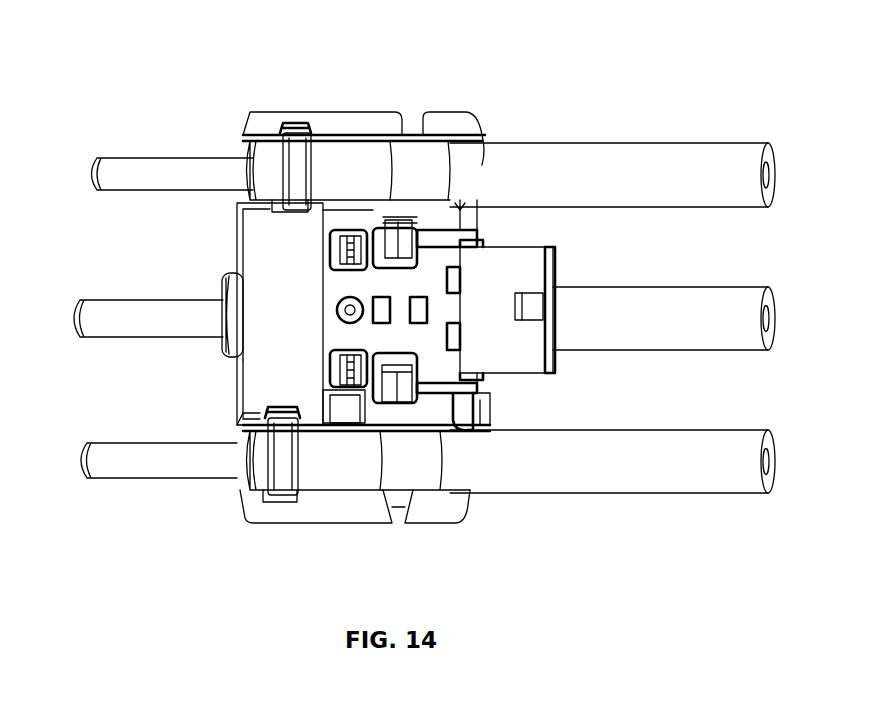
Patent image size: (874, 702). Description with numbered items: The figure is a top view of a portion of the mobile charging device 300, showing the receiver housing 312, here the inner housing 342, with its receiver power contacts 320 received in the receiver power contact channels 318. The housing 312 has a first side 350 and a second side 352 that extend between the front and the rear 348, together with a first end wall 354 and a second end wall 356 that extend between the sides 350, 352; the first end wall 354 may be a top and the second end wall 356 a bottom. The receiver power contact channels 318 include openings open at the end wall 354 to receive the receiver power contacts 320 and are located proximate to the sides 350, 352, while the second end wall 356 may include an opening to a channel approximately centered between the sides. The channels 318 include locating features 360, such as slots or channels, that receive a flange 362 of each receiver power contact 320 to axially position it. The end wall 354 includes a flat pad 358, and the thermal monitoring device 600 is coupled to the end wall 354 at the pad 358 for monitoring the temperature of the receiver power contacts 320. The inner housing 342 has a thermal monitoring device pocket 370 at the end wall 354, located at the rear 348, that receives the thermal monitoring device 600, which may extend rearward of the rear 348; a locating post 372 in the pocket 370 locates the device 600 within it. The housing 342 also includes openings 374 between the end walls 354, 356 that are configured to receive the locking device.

The mobile charging device 300 is at (409, 318).
The receiver housing 312 is at (255, 238).
The receiver power contact channels 318 is at (458, 132).
The receiver power contacts 320 is at (352, 162).
The inner housing 342 is at (270, 390).
The rear 348 is at (465, 405).
The first side 350 is at (298, 527).
The second side 352 is at (326, 112).
The first end wall 354 is at (272, 282).
The second end wall 356 is at (473, 420).
The flat pad 358 is at (275, 355).
The locating features 360 is at (292, 126).
The flange 362 is at (290, 158).
The thermal monitoring device pocket 370 is at (442, 228).
The locating post 372 is at (350, 323).
The openings 374 is at (399, 226).
The thermal monitoring device 600 is at (560, 256).